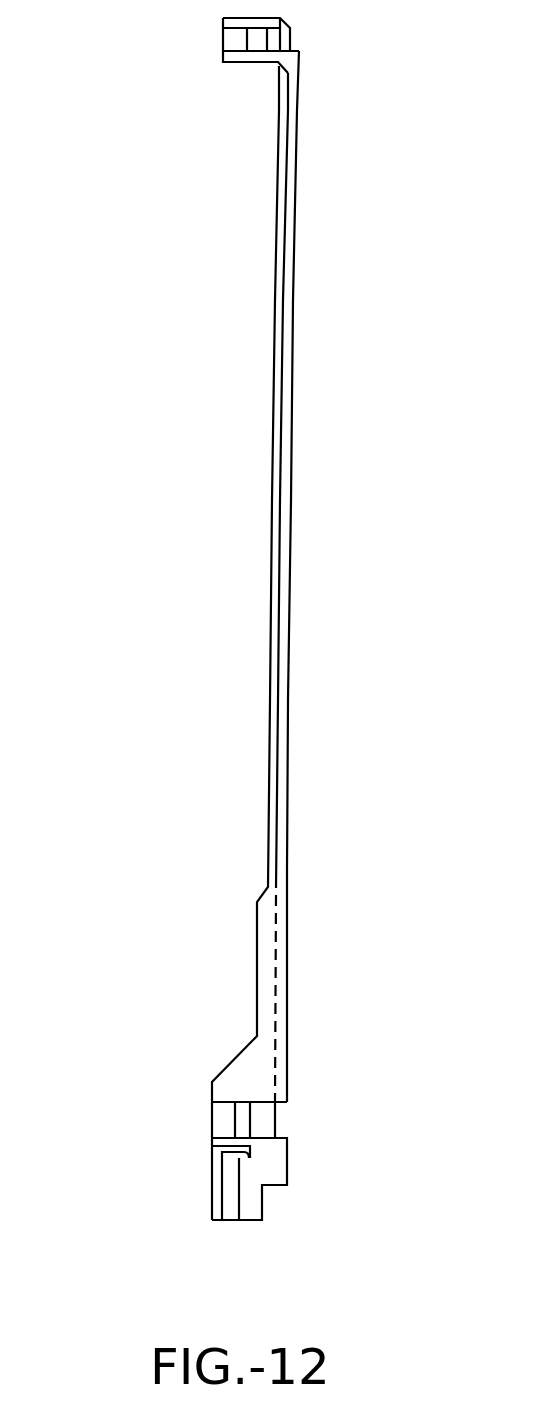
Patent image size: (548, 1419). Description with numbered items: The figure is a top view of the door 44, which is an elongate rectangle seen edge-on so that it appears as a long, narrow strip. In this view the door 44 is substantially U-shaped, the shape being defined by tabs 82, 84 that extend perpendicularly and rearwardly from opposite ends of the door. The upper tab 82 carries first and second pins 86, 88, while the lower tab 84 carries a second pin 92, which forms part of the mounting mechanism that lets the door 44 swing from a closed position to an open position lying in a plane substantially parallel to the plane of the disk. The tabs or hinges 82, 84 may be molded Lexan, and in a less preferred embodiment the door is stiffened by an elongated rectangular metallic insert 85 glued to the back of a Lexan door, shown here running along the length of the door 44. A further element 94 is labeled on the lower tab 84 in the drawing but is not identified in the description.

The blade strip 44 is at (292, 520).
The upper mounting block 82 is at (222, 49).
The lower end assembly 84 is at (174, 1120).
The backing plate 85 is at (271, 503).
The upper end assembly 86 is at (253, 44).
The upper cap 88 is at (291, 34).
The center web 92 is at (276, 1123).
The lower mounting block 94 is at (212, 1120).